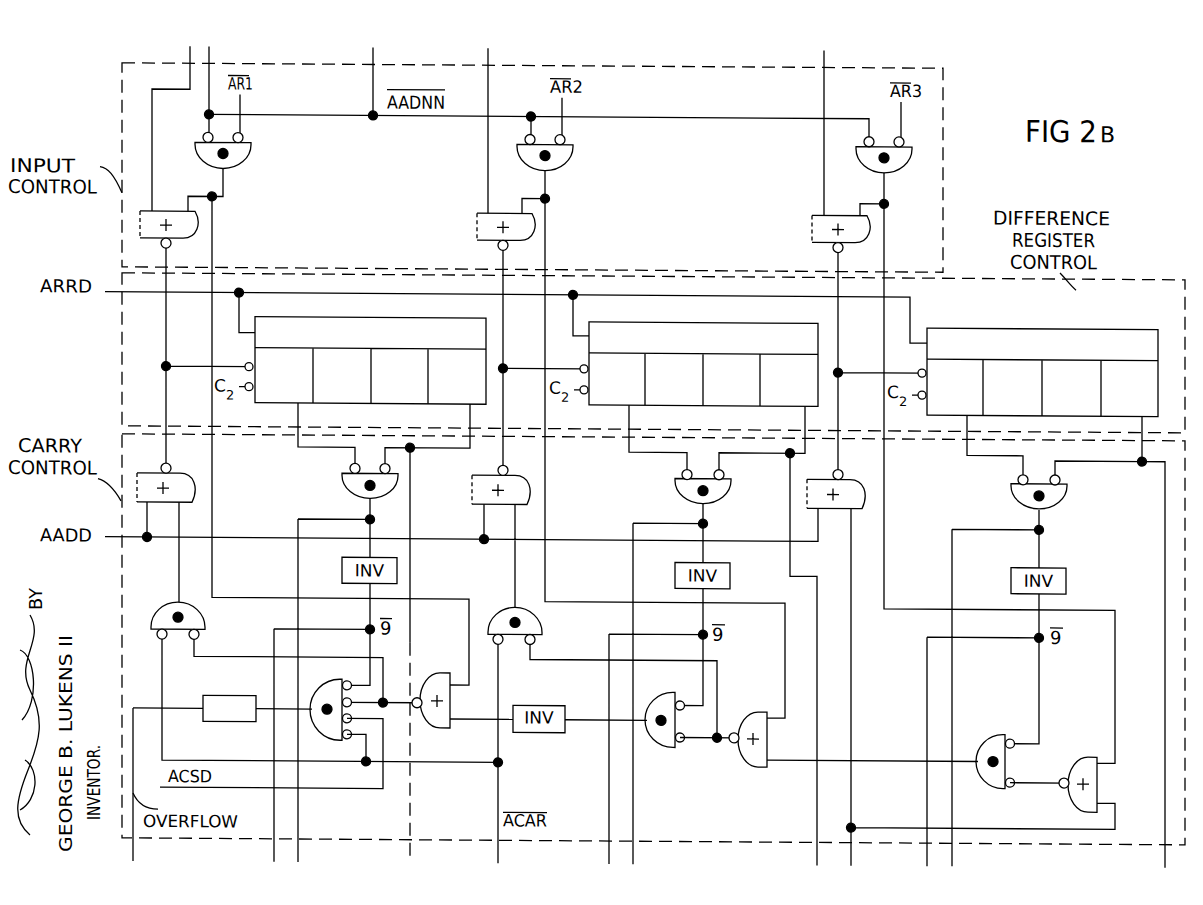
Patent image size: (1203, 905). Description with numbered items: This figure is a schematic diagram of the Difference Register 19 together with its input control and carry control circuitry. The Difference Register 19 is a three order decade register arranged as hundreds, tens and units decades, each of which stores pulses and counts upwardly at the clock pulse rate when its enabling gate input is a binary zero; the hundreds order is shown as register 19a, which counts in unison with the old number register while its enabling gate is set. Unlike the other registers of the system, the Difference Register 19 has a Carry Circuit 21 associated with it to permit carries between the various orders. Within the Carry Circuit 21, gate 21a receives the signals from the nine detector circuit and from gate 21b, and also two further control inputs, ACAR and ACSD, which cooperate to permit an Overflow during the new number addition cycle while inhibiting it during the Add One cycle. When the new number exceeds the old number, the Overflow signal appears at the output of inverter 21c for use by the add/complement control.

The Difference Register 19 is at (653, 340).
The hundreds order decade of Difference Register 19a is at (377, 315).
The Carry Circuit 21 is at (121, 633).
The gate 21a is at (322, 735).
The gate 21b is at (449, 727).
The inverter 21c is at (233, 721).